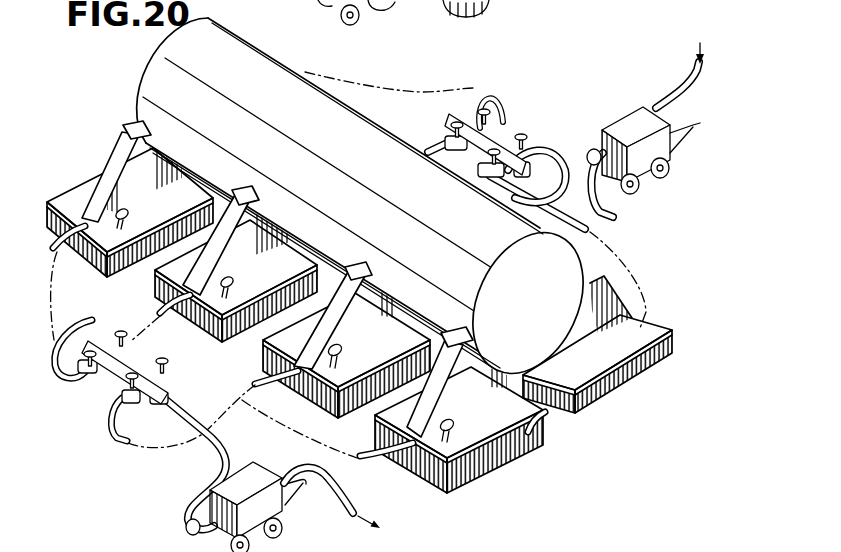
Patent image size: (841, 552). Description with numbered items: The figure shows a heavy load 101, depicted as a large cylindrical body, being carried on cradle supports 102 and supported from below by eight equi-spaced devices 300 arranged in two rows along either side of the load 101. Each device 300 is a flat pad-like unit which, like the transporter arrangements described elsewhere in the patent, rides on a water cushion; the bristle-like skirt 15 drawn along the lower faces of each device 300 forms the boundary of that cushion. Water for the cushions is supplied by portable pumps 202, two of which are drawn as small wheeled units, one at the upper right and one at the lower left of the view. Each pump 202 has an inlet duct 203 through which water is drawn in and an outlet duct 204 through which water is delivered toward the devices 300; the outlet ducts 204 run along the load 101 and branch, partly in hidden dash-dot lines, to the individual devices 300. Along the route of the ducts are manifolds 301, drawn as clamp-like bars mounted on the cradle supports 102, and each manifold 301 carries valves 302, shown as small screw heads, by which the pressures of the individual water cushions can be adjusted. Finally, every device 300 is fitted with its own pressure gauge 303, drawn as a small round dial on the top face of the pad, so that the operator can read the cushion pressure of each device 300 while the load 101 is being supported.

The brush bristles 15 is at (253, 362).
The load 101 is at (533, 314).
The cradle support 102 is at (245, 220).
The portable pump 202 is at (637, 127).
The inlet duct 203 is at (331, 497).
The outlet duct 204 is at (501, 101).
The device 300 is at (80, 193).
The manifold 301 is at (508, 133).
The valve 302 is at (120, 332).
The pressure gauge 303 is at (455, 432).